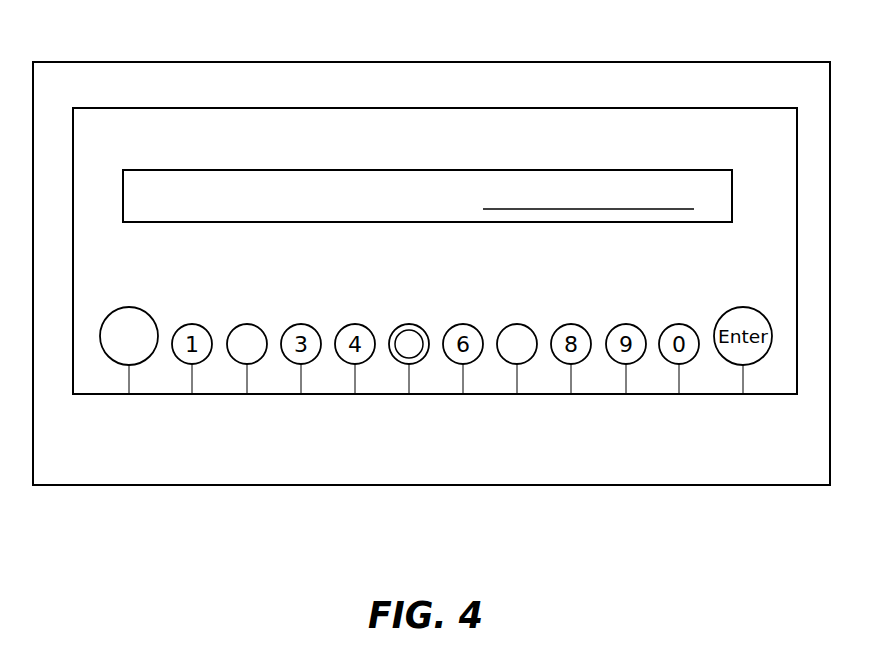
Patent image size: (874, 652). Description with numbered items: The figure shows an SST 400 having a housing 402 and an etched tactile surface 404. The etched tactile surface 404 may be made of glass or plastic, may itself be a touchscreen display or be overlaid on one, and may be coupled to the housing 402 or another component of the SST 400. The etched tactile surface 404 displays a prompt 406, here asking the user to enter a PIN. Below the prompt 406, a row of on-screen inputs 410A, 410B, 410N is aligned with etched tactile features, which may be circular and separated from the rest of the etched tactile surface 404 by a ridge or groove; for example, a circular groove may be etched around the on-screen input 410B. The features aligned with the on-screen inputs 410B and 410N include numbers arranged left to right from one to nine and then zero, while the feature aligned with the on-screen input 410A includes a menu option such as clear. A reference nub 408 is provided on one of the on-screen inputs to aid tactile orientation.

The SST 400 is at (692, 18).
The housing 402 is at (145, 62).
The etched tactile surface 404 is at (218, 108).
The prompt 406 is at (305, 170).
The reference nub 408 is at (412, 325).
The on-screen input 410A is at (129, 307).
The on-screen input 410B is at (244, 325).
The on-screen input 410N is at (517, 325).